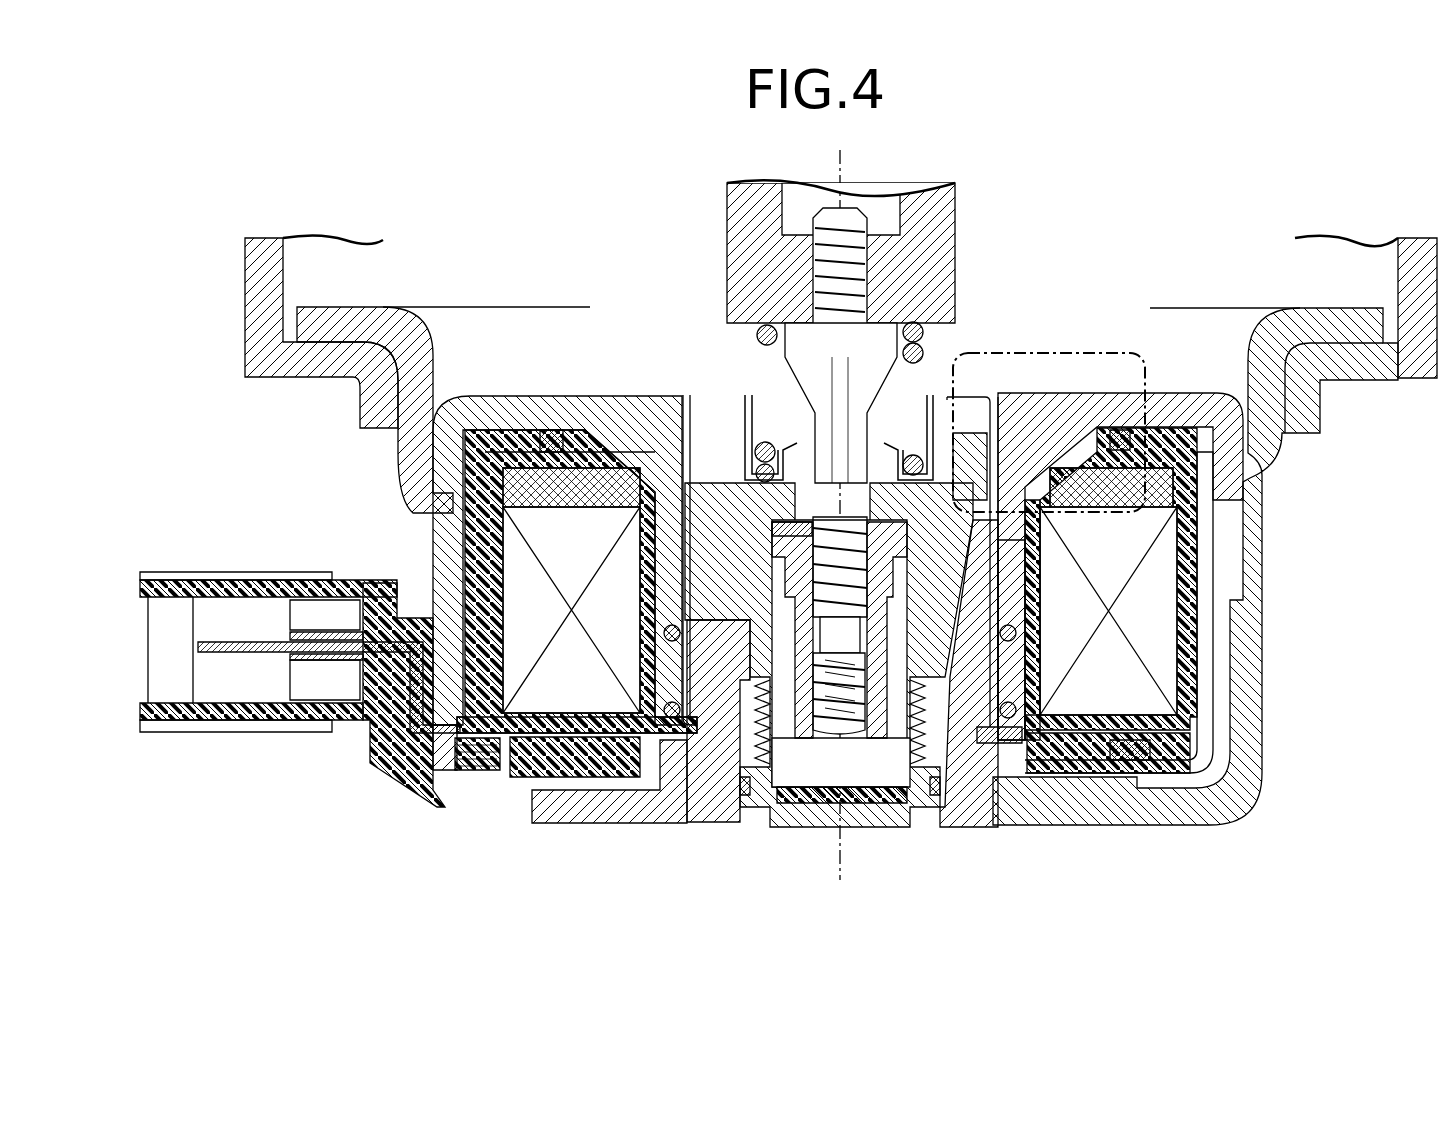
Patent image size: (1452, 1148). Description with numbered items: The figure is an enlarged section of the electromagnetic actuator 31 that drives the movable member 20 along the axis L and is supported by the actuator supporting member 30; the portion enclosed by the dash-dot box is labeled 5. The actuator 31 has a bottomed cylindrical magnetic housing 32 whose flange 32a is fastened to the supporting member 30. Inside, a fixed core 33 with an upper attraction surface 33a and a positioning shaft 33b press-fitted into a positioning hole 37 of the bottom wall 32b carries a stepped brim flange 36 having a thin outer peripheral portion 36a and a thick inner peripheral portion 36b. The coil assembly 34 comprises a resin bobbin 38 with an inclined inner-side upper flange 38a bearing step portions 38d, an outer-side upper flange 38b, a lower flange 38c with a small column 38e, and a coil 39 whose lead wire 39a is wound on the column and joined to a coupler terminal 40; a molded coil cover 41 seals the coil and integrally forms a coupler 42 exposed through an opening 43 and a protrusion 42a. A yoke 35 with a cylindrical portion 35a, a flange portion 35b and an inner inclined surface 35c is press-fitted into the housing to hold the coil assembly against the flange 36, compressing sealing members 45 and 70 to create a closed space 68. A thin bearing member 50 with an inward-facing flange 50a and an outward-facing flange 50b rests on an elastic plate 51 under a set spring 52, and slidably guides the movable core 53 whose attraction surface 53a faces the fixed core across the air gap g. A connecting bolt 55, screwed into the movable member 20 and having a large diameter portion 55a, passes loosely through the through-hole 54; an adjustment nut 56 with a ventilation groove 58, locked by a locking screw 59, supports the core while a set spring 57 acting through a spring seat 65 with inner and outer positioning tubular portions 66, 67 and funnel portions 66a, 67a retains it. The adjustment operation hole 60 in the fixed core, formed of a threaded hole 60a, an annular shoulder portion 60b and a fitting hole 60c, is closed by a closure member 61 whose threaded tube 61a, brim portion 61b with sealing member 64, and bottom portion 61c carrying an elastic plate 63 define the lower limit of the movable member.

The axis L is at (846, 180).
The solenoid valve 5 is at (1103, 348).
The movable member 20 is at (933, 214).
The actuator supporting member 30 is at (262, 268).
The electromagnetic actuator 31 is at (1314, 706).
The housing 32 is at (1262, 556).
The flange 32a is at (1345, 322).
The bottom wall 32b is at (1008, 826).
The fixed core 33 is at (1026, 642).
The attraction surface 33a is at (1040, 690).
The positioning shaft 33b is at (965, 828).
The coil assembly 34 is at (507, 432).
The yoke 35 is at (1100, 385).
The cylindrical portion 35a is at (1040, 548).
The flange portion 35b is at (1182, 400).
The inner inclined surface 35c is at (1045, 395).
The flange 36 is at (551, 878).
The thin outer peripheral portion 36a is at (580, 792).
The thick inner peripheral portion 36b is at (677, 772).
The positioning hole 37 is at (988, 826).
The bobbin 38 is at (640, 572).
The inner-side upper flange 38a is at (1092, 391).
The outer-side upper flange 38b is at (1125, 430).
The lower flange 38c is at (1165, 778).
The step portions 38d is at (540, 468).
The small column 38e is at (473, 784).
The coil 39 is at (551, 673).
The lead wire 39a is at (430, 770).
The coupler terminal 40 is at (222, 655).
The coil cover 41 is at (475, 432).
The coupler 42 is at (235, 586).
The protrusion 42a is at (395, 772).
The opening 43 is at (420, 516).
The sealing member 45 is at (550, 430).
The bearing member 50 is at (680, 432).
The inward-facing flange 50a is at (690, 395).
The outward-facing flange 50b is at (618, 716).
The elastic plate 51 is at (692, 800).
The set spring 52 is at (650, 640).
The movable core 53 is at (975, 440).
The attraction surface 53a is at (990, 556).
The through-hole 54 is at (885, 497).
The connecting bolt 55 is at (852, 445).
The large diameter portion 55a is at (792, 330).
The adjustment nut 56 is at (790, 576).
The set spring 57 is at (925, 347).
The ventilation groove 58 is at (770, 528).
The locking screw 59 is at (845, 722).
The adjustment operation hole 60 is at (940, 816).
The threaded hole 60a is at (702, 603).
The annular shoulder portion 60b is at (765, 780).
The fitting hole 60c is at (745, 800).
The closure member 61 is at (823, 827).
The threaded tube 61a is at (1018, 592).
The brim portion 61b is at (945, 782).
The bottom portion 61c is at (778, 800).
The elastic plate 63 is at (886, 804).
The sealing member 64 is at (700, 782).
The spring seat 65 is at (762, 488).
The inner positioning tubular portion 66 is at (893, 477).
The funnel portion 66a is at (855, 440).
The outer positioning tubular portion 67 is at (1111, 487).
The funnel portion 67a is at (758, 442).
The closed space 68 is at (896, 619).
The sealing member 70 is at (1128, 740).
The air gap g is at (1030, 610).